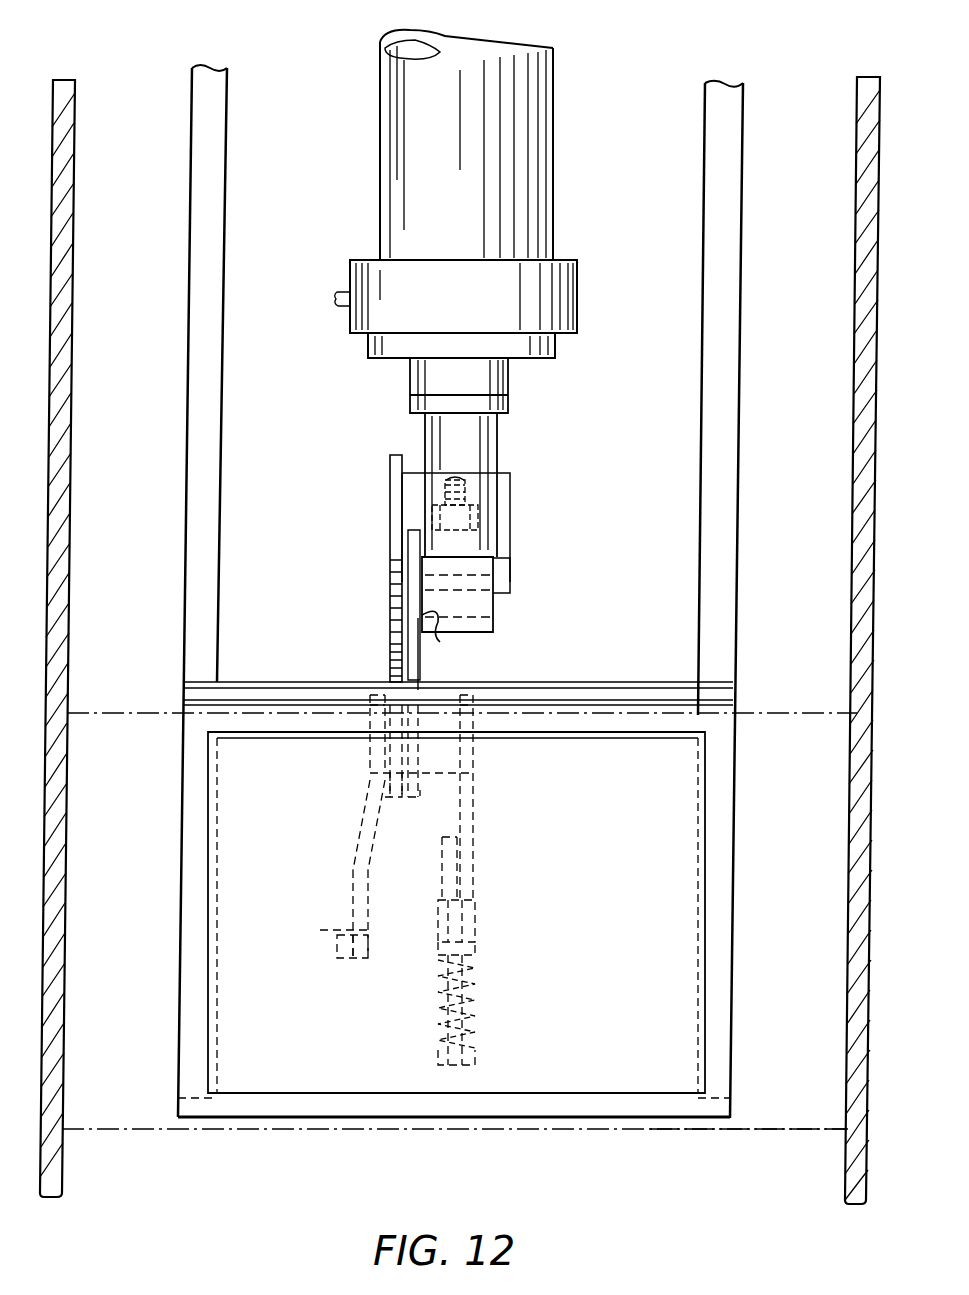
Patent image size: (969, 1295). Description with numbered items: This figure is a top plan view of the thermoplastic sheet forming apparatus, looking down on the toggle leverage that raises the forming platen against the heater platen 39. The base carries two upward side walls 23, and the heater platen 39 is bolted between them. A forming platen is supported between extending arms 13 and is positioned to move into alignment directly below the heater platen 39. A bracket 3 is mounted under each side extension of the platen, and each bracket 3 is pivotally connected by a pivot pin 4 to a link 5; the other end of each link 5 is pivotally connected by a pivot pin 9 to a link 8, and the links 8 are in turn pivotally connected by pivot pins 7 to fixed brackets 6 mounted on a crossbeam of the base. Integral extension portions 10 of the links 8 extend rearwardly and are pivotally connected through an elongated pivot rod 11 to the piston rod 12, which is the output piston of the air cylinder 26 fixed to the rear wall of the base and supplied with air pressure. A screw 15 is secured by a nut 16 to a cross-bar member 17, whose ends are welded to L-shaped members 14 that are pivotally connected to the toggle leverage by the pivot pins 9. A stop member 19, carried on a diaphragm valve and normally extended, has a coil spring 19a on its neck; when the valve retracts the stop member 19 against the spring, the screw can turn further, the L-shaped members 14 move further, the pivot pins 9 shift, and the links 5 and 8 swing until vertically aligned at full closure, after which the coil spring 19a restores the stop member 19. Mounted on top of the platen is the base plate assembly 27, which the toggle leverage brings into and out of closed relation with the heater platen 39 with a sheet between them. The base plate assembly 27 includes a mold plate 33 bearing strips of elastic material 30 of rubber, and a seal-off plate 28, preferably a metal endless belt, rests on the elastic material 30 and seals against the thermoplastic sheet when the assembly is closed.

The air cylinder 26 is at (382, 195).
The piston rod 12 is at (425, 436).
The extending arms 13 is at (190, 562).
The L-shaped members 14 is at (390, 602).
The screw 15 is at (470, 490).
The nut 16 is at (476, 520).
The cross-bar member 17 is at (505, 580).
The elongated pivot rod 11 is at (447, 636).
The integral extension portions 10 is at (416, 657).
The mold plate 33 is at (631, 672).
The side walls 23 is at (54, 745).
The strips of elastic material 30 is at (722, 752).
The seal-off plate 28 is at (636, 899).
The base plate assembly 27 is at (588, 1106).
The heater platen 39 is at (710, 1130).
The links 8 is at (378, 818).
The pivot pins 9 is at (440, 760).
The links 5 is at (470, 805).
The bracket 3 is at (445, 848).
The pivot pins 4 is at (440, 885).
The fixed brackets 6 is at (337, 925).
The pivot pins 7 is at (340, 940).
The stop member 19 is at (478, 948).
The coil spring 19a is at (478, 1000).